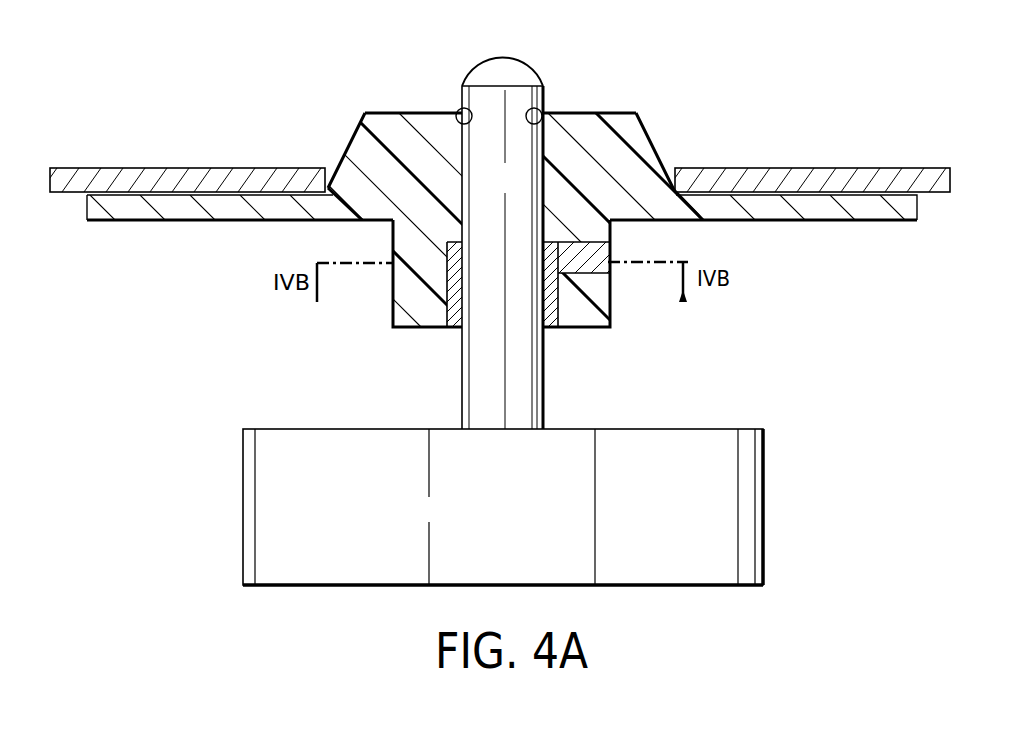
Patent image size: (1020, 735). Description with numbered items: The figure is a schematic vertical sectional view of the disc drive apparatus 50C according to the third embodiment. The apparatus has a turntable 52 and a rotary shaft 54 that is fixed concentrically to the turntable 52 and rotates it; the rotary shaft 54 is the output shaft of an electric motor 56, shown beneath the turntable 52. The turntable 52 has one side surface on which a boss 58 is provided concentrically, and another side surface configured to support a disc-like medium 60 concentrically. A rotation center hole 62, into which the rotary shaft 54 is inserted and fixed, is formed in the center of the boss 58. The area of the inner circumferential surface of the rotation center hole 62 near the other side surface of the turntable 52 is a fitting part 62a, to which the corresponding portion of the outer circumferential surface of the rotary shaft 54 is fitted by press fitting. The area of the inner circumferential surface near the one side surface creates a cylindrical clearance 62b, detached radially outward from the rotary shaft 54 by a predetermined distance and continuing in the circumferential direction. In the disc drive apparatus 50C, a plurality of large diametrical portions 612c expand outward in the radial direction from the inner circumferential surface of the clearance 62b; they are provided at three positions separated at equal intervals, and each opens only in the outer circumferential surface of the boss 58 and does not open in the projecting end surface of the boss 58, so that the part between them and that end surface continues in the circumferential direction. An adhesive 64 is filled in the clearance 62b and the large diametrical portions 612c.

The disc drive apparatus 50C is at (526, 294).
The turntable 52 is at (133, 212).
The rotary shaft 54 is at (501, 58).
The electric motor 56 is at (767, 507).
The boss 58 is at (392, 290).
The disc-like medium 60 is at (872, 173).
The rotation center hole 62 is at (462, 108).
The fitting part 62a is at (545, 108).
The clearance 62b is at (452, 328).
The adhesive 64 is at (552, 328).
The large diametrical portion 612c is at (612, 261).